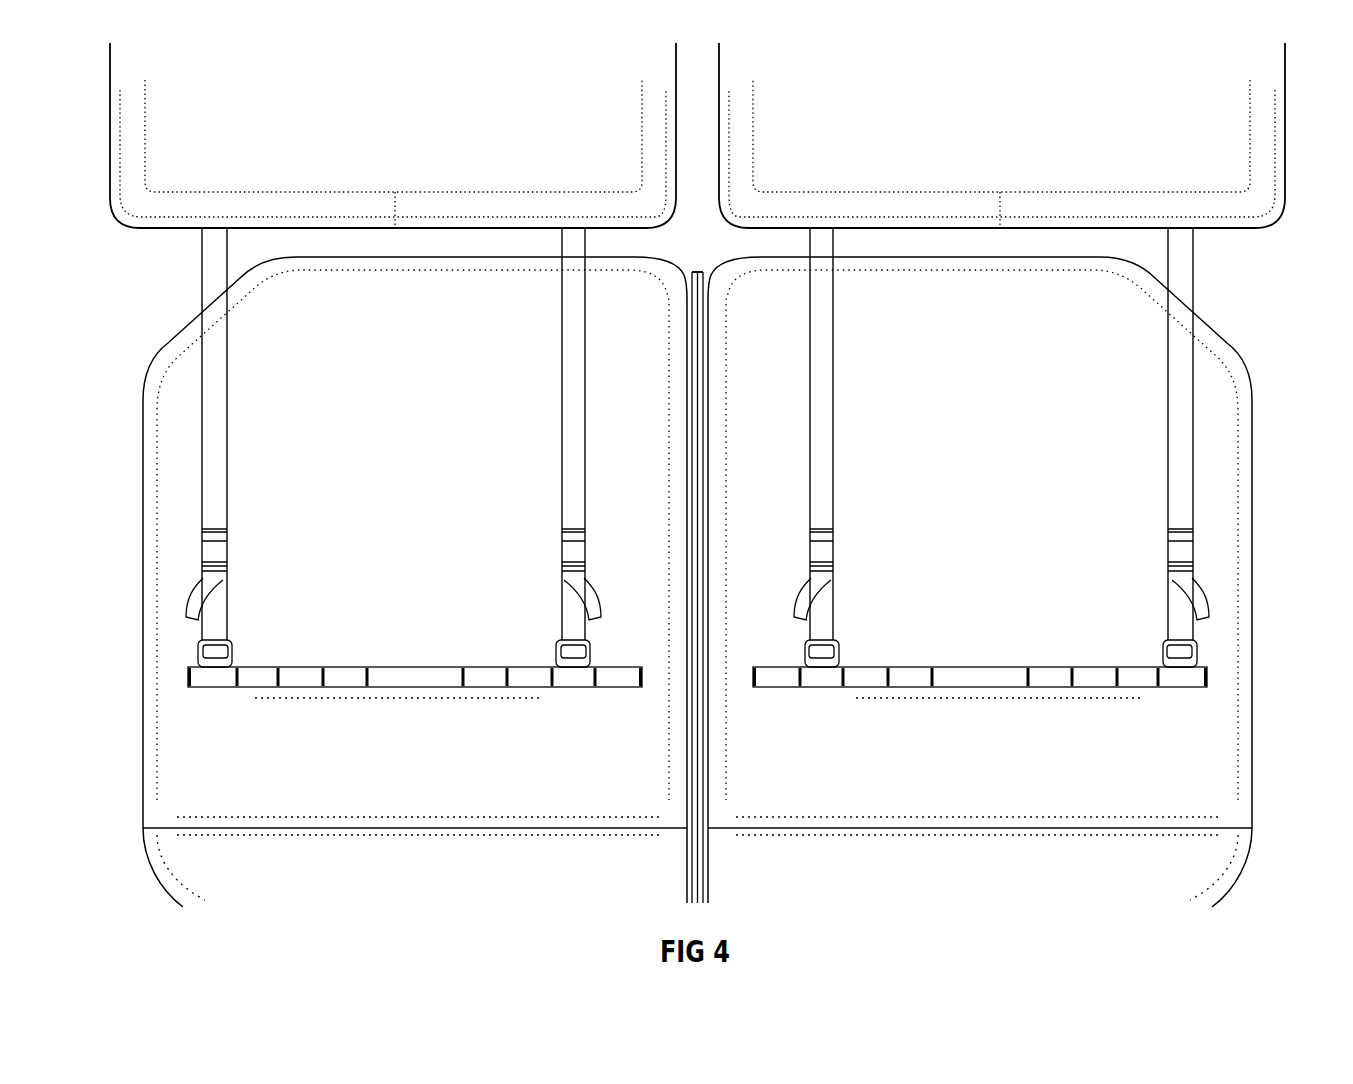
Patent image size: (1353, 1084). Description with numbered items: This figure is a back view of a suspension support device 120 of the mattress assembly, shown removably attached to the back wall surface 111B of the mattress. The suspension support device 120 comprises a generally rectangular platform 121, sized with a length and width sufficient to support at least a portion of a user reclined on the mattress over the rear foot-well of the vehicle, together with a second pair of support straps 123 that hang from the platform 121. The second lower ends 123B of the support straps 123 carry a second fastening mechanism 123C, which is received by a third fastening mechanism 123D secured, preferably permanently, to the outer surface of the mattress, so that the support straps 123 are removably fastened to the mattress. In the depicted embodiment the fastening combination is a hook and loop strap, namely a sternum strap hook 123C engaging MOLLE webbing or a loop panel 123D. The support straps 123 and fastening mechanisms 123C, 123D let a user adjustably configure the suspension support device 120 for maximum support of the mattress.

The suspension support device 120 is at (126, 243).
The platform 121 is at (408, 107).
The back wall surface 111B is at (378, 424).
The second pair of support straps 123 is at (1185, 460).
The second lower ends 123B is at (210, 633).
The second fastening mechanism 123C is at (187, 652).
The third fastening mechanism 123D is at (181, 678).